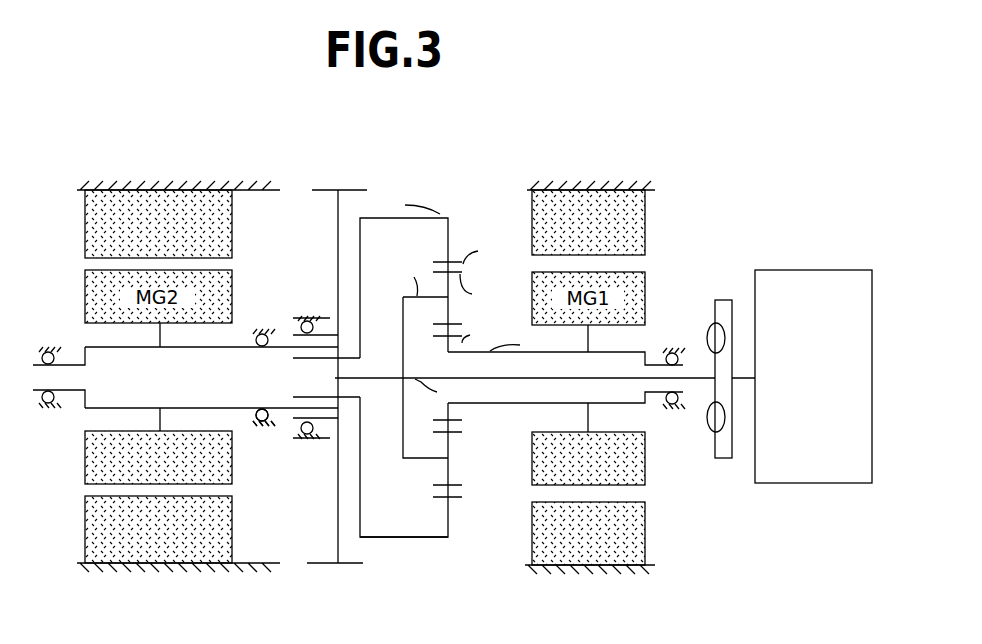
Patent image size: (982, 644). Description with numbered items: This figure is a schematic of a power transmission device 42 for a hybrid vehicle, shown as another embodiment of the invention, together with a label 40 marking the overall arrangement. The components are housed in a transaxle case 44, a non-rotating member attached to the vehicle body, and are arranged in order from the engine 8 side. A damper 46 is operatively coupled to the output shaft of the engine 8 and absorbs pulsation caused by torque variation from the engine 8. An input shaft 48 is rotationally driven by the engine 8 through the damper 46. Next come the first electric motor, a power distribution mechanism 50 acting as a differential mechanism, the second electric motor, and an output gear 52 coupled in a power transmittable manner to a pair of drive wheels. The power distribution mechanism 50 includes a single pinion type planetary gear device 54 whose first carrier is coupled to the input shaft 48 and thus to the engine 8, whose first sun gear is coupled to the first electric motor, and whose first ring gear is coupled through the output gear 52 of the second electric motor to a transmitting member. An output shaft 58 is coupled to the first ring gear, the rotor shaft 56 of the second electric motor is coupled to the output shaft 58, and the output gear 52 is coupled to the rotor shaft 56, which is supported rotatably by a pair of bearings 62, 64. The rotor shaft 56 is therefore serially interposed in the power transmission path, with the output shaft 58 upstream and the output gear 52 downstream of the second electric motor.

The engine 8 is at (806, 291).
The vehicle power transmission device 40 is at (770, 165).
The power transmission device 42 is at (693, 245).
The case 44 is at (160, 190).
The damper 46 is at (722, 300).
The input shaft 48 is at (500, 381).
The power distribution mechanism 50 is at (444, 214).
The output gear 52 is at (338, 186).
The planetary gear device 54 is at (447, 545).
The rotor shaft 56 is at (95, 345).
The output shaft 58 is at (364, 351).
The bearing 62 is at (262, 419).
The bearing 64 is at (42, 396).